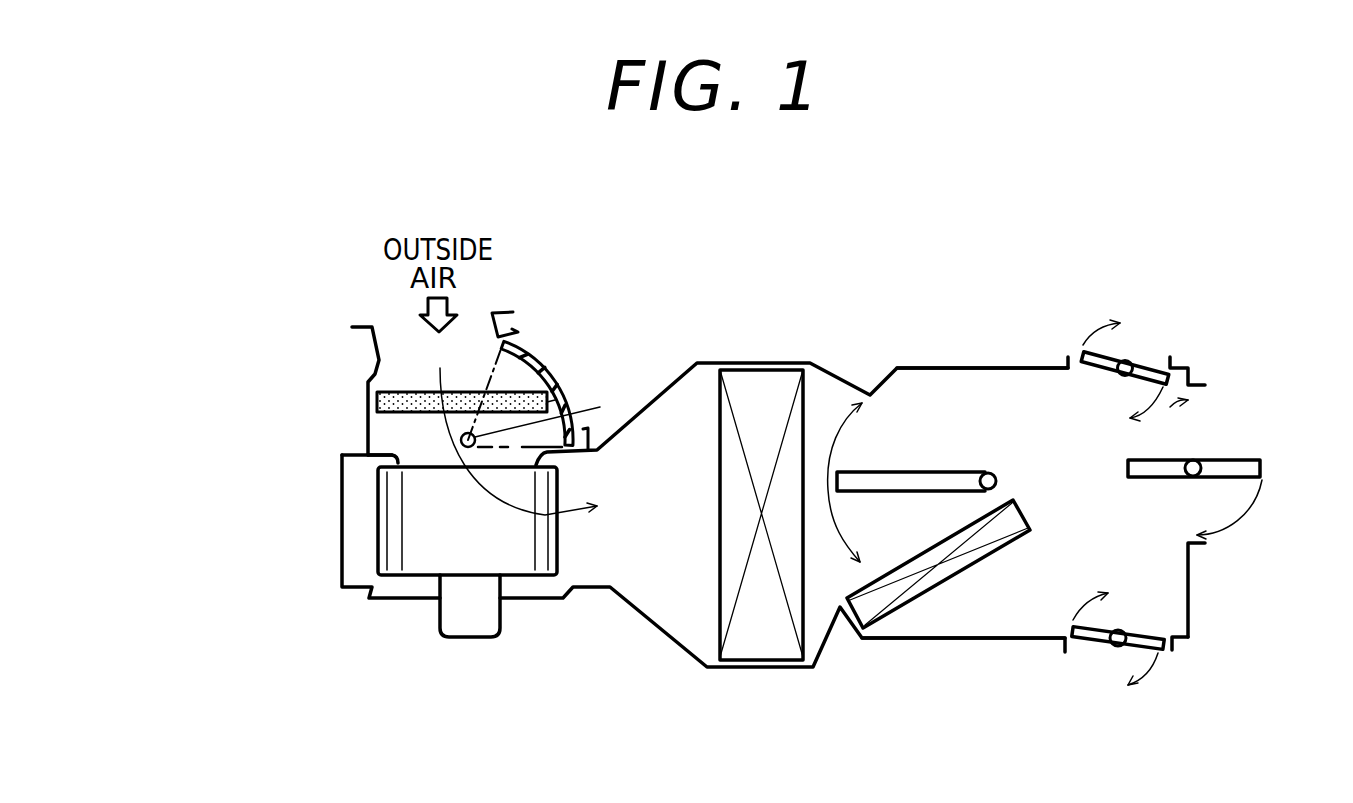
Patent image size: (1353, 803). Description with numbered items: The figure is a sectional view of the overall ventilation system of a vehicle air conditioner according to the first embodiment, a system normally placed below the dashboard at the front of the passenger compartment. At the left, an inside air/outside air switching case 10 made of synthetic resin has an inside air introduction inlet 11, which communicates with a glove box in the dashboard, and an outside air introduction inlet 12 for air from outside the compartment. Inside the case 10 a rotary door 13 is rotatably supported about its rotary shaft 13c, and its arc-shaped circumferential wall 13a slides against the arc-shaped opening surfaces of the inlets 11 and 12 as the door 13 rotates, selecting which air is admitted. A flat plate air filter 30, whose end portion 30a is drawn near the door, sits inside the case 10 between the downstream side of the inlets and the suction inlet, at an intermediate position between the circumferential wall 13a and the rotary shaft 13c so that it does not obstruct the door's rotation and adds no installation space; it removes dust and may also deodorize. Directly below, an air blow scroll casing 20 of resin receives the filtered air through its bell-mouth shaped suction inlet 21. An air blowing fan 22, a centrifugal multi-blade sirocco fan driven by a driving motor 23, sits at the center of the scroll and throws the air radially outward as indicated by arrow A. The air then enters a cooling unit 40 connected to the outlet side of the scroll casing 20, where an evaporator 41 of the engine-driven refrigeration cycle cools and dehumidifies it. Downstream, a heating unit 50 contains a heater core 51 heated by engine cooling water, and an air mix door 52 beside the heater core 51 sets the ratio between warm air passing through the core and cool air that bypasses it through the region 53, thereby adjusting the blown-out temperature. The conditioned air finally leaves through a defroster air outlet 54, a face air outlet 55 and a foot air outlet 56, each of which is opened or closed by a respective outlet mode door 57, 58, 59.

The inside air/outside air switching case 10 is at (368, 420).
The inside air introduction inlet 11 is at (563, 365).
The outside air introduction inlet 12 is at (413, 333).
The inside air/outside air switching rotary door 13 is at (596, 325).
The arc-shaped circumferential wall 13a is at (560, 370).
The rotary shaft 13c is at (600, 407).
The air blow scroll casing 20 is at (401, 543).
The bell-mouth shaped suction inlet 21 is at (420, 460).
The air blowing fan 22 is at (390, 557).
The driving motor 23 is at (447, 615).
The air filter 30 is at (510, 341).
The filter end portion 30a is at (570, 397).
The cooling unit 40 is at (784, 443).
The evaporator 41 is at (775, 387).
The heating unit 50 is at (993, 368).
The heater core 51 is at (945, 573).
The air mix door 52 is at (903, 475).
The bypass passage 53 is at (1112, 510).
The defroster air outlet 54 is at (1128, 347).
The face air outlet 55 is at (1198, 422).
The foot air outlet 56 is at (1120, 653).
The outlet mode door 57 is at (1148, 375).
The outlet mode door 58 is at (1228, 467).
The outlet mode door 59 is at (1087, 637).
The arrow A is at (570, 515).